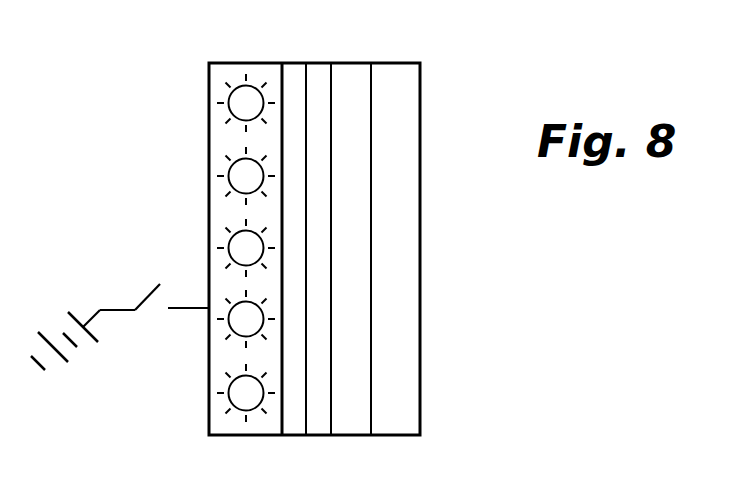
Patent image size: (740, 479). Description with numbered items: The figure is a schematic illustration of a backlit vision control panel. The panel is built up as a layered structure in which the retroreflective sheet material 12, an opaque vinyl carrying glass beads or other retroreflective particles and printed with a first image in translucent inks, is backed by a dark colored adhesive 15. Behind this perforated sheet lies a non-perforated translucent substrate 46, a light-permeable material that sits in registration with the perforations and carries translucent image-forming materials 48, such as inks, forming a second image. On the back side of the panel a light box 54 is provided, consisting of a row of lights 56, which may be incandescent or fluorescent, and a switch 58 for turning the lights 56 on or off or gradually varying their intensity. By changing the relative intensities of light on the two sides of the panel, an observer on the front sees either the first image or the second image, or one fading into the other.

The retroreflective sheet material 12 is at (395, 62).
The dark colored adhesive 15 is at (351, 62).
The translucent substrate 46 is at (322, 216).
The translucent image-forming materials 48 is at (297, 141).
The light box 54 is at (296, 62).
The lights 56 is at (239, 178).
The switch 58 is at (148, 293).